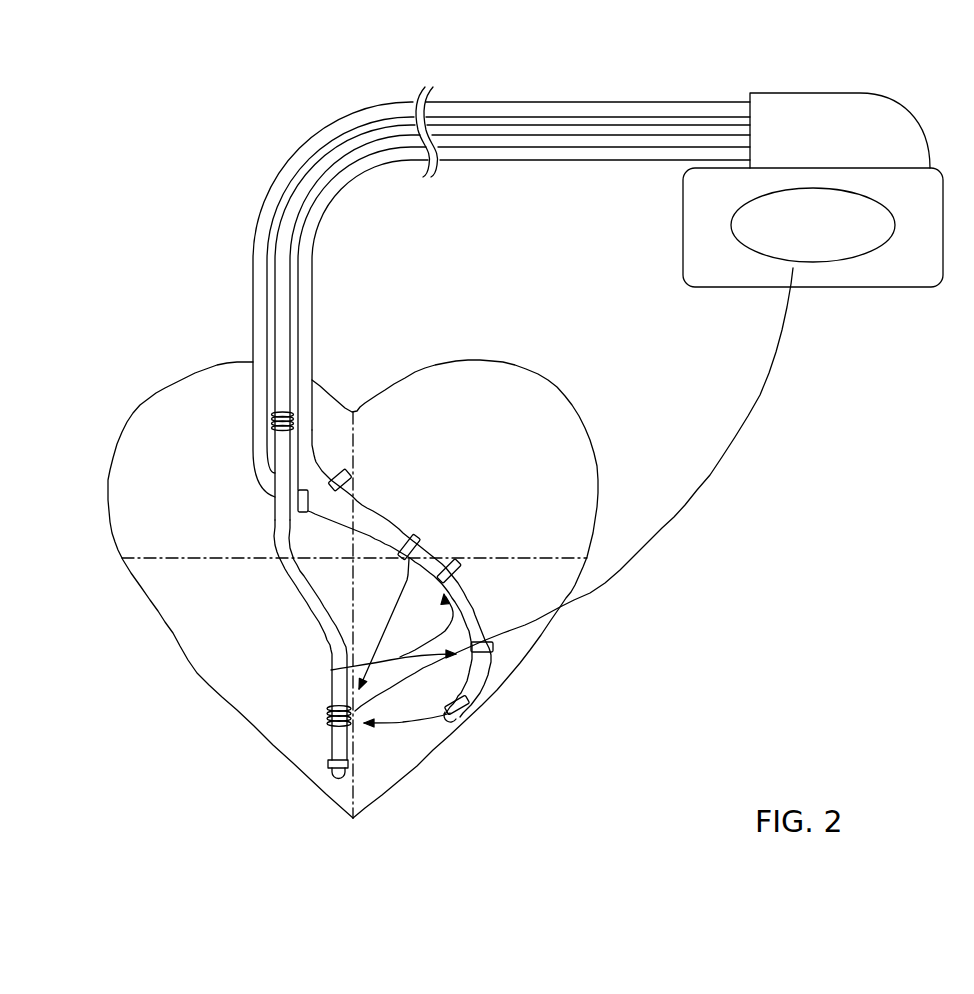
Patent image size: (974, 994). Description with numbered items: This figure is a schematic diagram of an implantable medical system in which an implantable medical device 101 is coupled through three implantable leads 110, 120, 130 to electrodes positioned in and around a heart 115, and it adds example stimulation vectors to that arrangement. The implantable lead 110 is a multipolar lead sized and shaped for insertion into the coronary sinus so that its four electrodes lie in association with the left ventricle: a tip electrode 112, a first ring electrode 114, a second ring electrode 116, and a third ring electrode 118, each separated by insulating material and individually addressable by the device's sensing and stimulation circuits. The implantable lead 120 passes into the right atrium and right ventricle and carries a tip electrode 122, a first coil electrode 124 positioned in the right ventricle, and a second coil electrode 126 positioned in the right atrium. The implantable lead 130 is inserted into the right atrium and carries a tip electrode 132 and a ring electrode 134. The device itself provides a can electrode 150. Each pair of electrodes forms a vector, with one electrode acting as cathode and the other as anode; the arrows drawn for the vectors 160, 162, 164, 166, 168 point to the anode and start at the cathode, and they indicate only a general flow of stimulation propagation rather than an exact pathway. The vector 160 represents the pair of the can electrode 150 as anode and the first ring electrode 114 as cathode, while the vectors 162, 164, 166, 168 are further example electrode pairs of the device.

The implantable medical device 101 is at (883, 92).
The implantable lead 110 is at (298, 253).
The tip electrode 112 is at (467, 713).
The first ring electrode 114 is at (493, 648).
The heart 115 is at (145, 405).
The second ring electrode 116 is at (451, 567).
The third ring electrode 118 is at (411, 537).
The implantable lead 120 is at (297, 189).
The tip electrode 122 is at (328, 764).
The first coil electrode 124 is at (327, 710).
The second coil electrode 126 is at (272, 418).
The implantable lead 130 is at (333, 128).
The tip electrode 132 is at (348, 473).
The ring electrode 134 is at (304, 514).
The can electrode 150 is at (833, 262).
The vector 160 is at (722, 457).
The vector 162 is at (402, 723).
The vector 164 is at (386, 634).
The vector 166 is at (331, 670).
The vector 168 is at (405, 663).